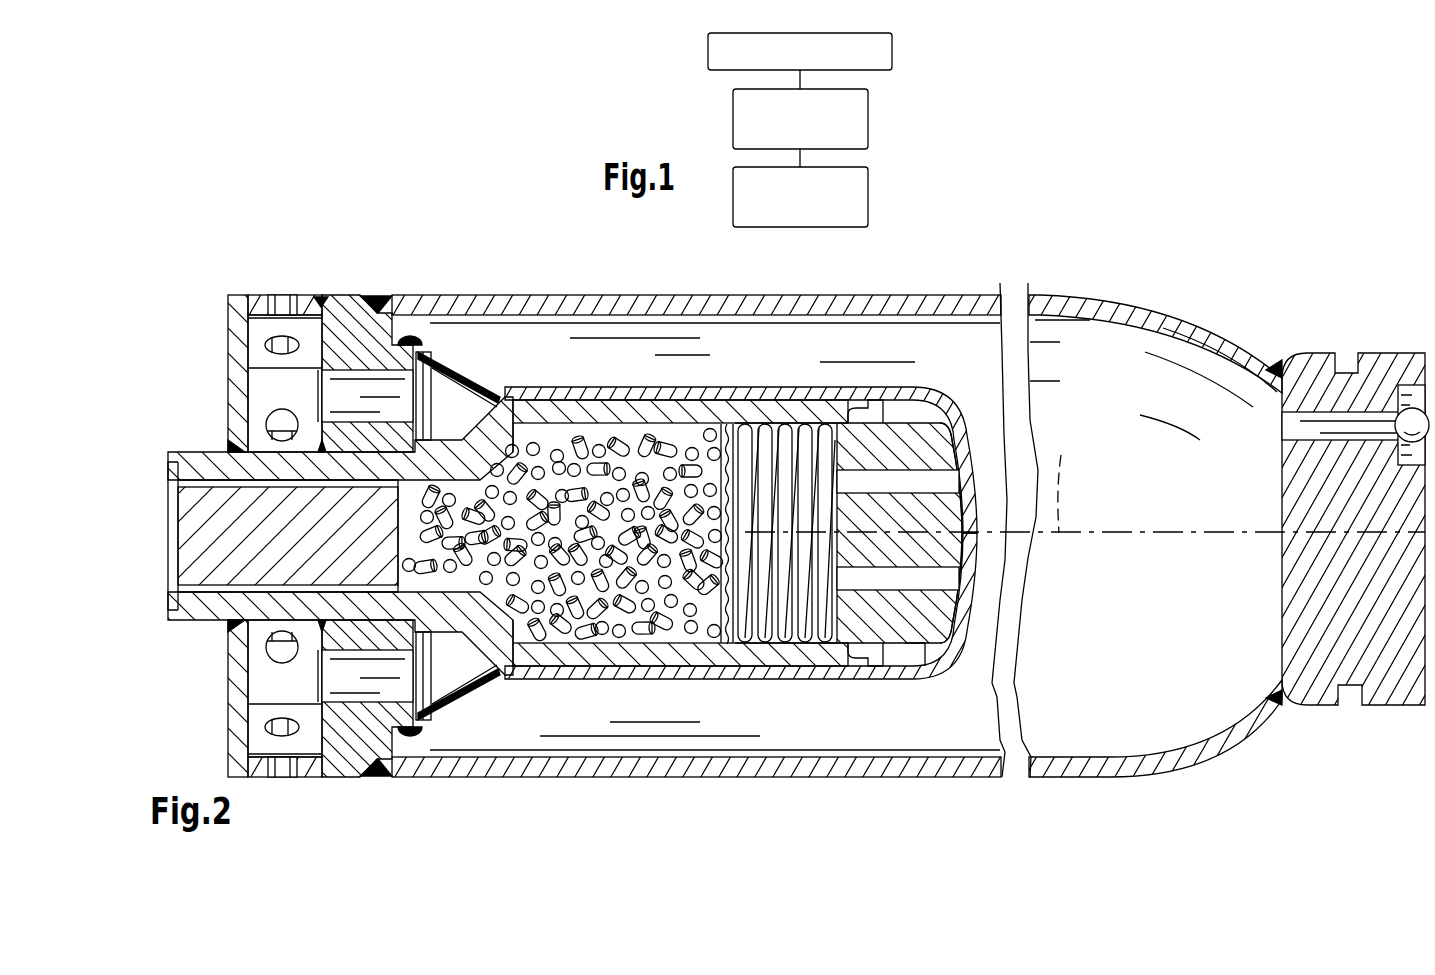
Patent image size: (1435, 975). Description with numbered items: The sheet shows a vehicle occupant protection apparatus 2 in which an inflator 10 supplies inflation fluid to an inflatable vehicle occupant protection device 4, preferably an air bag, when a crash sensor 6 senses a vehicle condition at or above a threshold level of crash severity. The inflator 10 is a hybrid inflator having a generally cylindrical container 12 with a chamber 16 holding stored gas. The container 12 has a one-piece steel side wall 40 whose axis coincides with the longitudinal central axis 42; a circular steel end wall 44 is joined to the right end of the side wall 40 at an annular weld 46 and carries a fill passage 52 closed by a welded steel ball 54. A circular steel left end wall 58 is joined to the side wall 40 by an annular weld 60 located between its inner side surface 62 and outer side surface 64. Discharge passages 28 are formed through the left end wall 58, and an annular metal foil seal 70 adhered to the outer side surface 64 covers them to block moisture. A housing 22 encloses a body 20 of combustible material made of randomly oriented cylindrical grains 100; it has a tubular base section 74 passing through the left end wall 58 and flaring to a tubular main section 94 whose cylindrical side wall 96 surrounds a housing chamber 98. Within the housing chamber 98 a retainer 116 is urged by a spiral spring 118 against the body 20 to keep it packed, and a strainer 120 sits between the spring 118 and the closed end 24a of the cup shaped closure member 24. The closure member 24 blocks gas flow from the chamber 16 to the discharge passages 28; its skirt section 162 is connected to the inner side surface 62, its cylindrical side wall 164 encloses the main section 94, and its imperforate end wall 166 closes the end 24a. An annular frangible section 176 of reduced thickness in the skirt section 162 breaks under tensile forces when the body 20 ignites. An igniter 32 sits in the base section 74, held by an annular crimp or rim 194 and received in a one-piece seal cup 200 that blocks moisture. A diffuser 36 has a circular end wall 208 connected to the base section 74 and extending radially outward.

In FIG. 1, the vehicle occupant protection apparatus 2 is at (925, 150).
In FIG. 1, the inflatable vehicle occupant protection device 4 is at (733, 190).
In FIG. 1, the crash sensor 6 is at (708, 52).
In FIG. 1, the inflator 10 is at (733, 120).
In FIG. 2, the inflator 10 is at (838, 830).
In FIG. 2, the container 12 is at (906, 780).
In FIG. 2, the chamber 16 is at (1073, 772).
In FIG. 2, the body of combustible material 20 is at (626, 650).
In FIG. 2, the housing 22 is at (814, 668).
In FIG. 2, the cup shaped closure member 24 is at (702, 684).
In FIG. 2, the closed end 24a is at (978, 488).
In FIG. 2, the discharge passages 28 is at (343, 408).
In FIG. 2, the igniter 32 is at (232, 580).
In FIG. 2, the diffuser 36 is at (273, 781).
In FIG. 2, the side wall 40 is at (1028, 283).
In FIG. 2, the longitudinal central axis 42 is at (1061, 470).
In FIG. 2, the end wall 44 is at (1326, 350).
In FIG. 2, the annular weld 46 is at (1288, 368).
In FIG. 2, the fill passage 52 is at (1300, 426).
In FIG. 2, the steel ball 54 is at (1428, 408).
In FIG. 2, the left end wall 58 is at (322, 292).
In FIG. 2, the annular weld 60 is at (380, 300).
In FIG. 2, the inner side surface 62 is at (421, 338).
In FIG. 2, the outer side surface 64 is at (318, 332).
In FIG. 2, the annular metal foil seal 70 is at (317, 376).
In FIG. 2, the tubular base section 74 is at (456, 432).
In FIG. 2, the tubular main section 94 is at (802, 385).
In FIG. 2, the cylindrical side wall 96 is at (812, 396).
In FIG. 2, the housing chamber 98 is at (661, 644).
In FIG. 2, the cylindrical grains 100 is at (598, 440).
In FIG. 2, the retainer 116 is at (729, 652).
In FIG. 2, the spiral spring 118 is at (770, 424).
In FIG. 2, the strainer 120 is at (920, 652).
In FIG. 2, the skirt section 162 is at (480, 693).
In FIG. 2, the cylindrical side wall 164 is at (744, 670).
In FIG. 2, the end wall 166 is at (972, 556).
In FIG. 2, the annular frangible section 176 is at (430, 690).
In FIG. 2, the annular crimp or rim 194 is at (176, 618).
In FIG. 2, the seal cup 200 is at (292, 472).
In FIG. 2, the circular end wall 208 is at (238, 416).